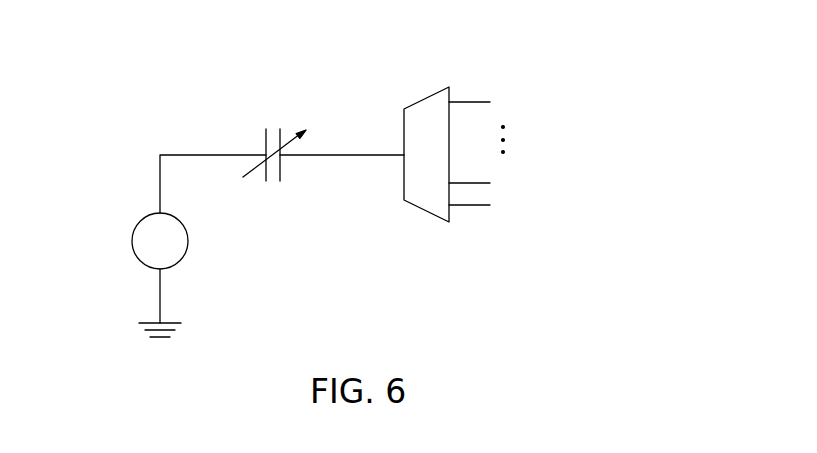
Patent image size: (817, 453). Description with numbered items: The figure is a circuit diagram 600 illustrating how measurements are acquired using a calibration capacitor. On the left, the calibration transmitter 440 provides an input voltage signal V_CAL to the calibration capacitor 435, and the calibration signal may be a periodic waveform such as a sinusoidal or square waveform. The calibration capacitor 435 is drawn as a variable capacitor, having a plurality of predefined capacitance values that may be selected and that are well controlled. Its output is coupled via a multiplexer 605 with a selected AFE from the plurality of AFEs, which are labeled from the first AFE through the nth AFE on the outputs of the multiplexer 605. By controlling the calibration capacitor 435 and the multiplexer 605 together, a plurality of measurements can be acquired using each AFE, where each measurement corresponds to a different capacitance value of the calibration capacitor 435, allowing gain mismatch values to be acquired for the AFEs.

The circuit diagram 600 is at (684, 68).
The calibration capacitor 435 is at (282, 193).
The calibration transmitter 440 is at (198, 263).
The multiplexer 605 is at (428, 215).